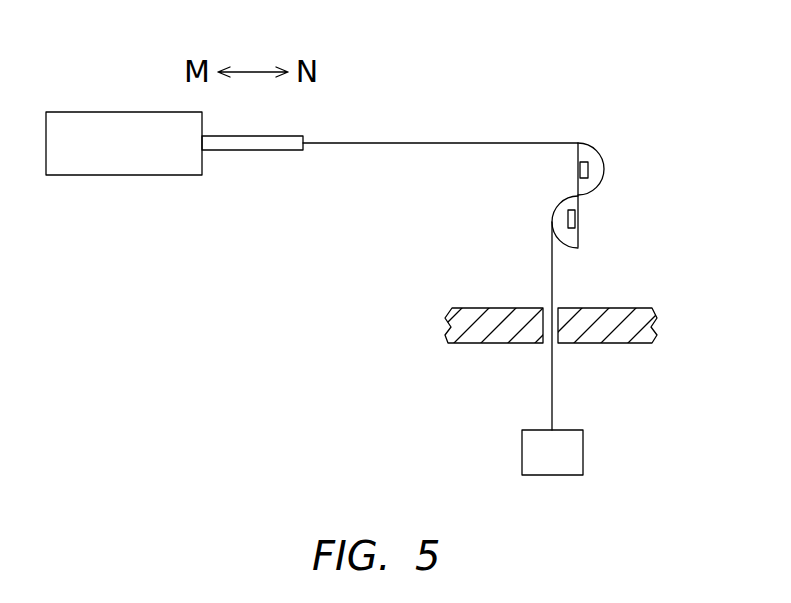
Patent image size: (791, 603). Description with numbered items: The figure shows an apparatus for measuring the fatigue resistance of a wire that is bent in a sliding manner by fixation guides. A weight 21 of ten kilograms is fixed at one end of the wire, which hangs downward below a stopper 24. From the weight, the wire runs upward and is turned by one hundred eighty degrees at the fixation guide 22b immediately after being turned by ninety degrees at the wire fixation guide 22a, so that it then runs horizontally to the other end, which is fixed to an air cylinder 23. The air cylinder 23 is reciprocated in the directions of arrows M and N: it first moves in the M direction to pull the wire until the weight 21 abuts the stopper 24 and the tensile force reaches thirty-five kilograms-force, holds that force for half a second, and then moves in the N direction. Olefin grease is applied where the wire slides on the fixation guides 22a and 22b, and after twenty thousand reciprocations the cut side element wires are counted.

The air cylinder 23 is at (134, 128).
The wire fixation guide 22a is at (598, 177).
The fixation guide 22b is at (562, 213).
The stopper 24 is at (625, 335).
The weight 21 is at (538, 452).